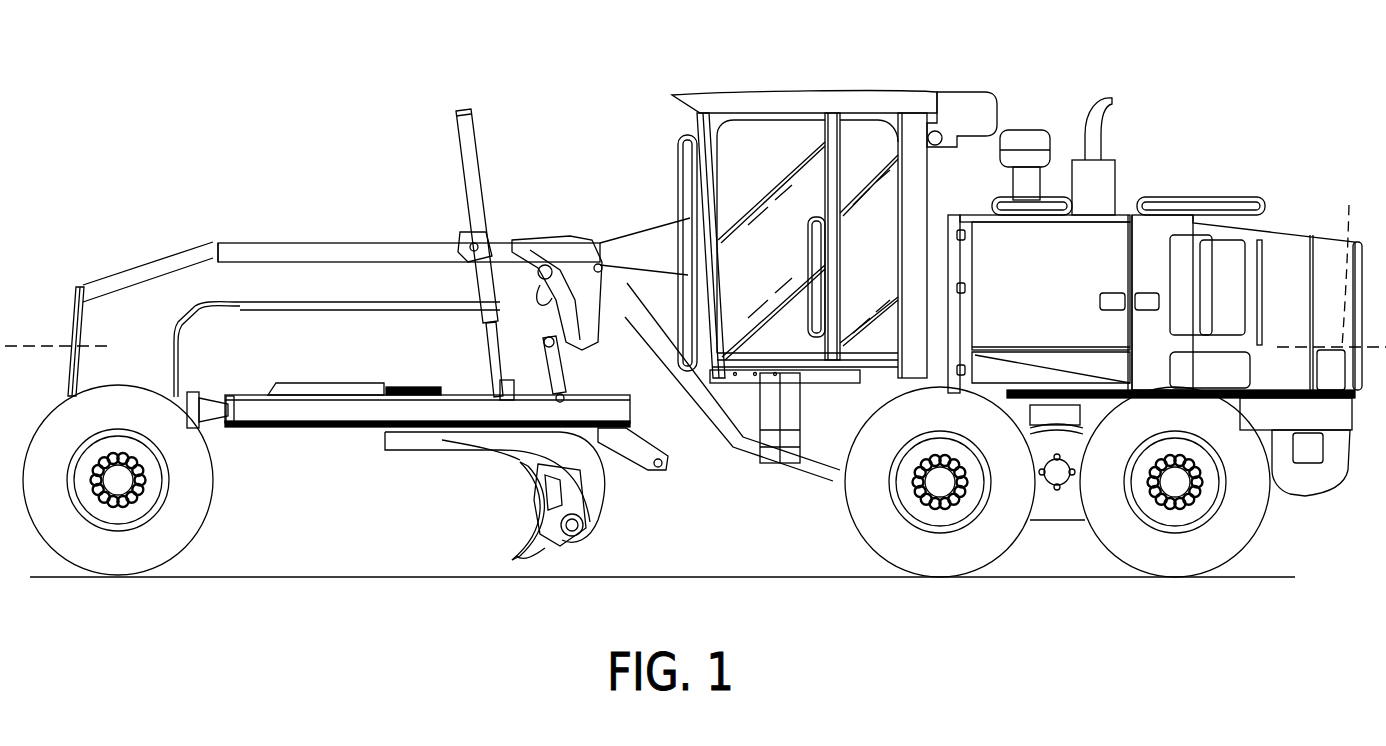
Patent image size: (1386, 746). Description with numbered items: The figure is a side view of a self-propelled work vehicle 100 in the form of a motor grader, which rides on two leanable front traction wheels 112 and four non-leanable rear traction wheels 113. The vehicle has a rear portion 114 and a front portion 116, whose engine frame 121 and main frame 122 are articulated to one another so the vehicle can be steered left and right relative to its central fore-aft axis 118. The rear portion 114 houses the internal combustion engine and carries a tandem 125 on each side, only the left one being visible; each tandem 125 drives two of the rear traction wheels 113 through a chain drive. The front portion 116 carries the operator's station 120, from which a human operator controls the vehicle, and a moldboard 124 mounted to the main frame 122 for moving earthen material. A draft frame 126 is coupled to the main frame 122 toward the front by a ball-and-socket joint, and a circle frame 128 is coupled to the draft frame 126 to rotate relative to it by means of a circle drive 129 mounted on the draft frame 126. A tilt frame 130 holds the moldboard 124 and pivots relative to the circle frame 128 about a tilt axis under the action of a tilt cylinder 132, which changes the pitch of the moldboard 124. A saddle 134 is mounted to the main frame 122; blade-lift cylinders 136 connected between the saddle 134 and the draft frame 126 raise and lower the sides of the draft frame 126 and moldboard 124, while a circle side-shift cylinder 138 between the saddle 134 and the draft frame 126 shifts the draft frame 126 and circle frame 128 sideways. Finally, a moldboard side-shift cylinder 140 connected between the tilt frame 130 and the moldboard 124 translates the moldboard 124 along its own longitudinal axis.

The self-propelled work vehicle 100 is at (192, 74).
The front traction wheels 112 is at (178, 538).
The rear traction wheels 113 is at (996, 562).
The rear portion 114 is at (1153, 178).
The front portion 116 is at (200, 214).
The central fore-aft axis 118 is at (40, 346).
The operator's station 120 is at (825, 96).
The engine frame 121 is at (1280, 420).
The main frame 122 is at (320, 266).
The moldboard 124 is at (528, 546).
The tandem 125 is at (1052, 508).
The draft frame 126 is at (293, 410).
The circle frame 128 is at (600, 498).
The circle drive 129 is at (410, 386).
The tilt frame 130 is at (596, 528).
The tilt cylinder 132 is at (630, 470).
The saddle 134 is at (546, 256).
The blade-lift cylinders 136 is at (468, 128).
The circle side-shift cylinder 138 is at (562, 392).
The moldboard side-shift cylinder 140 is at (547, 536).